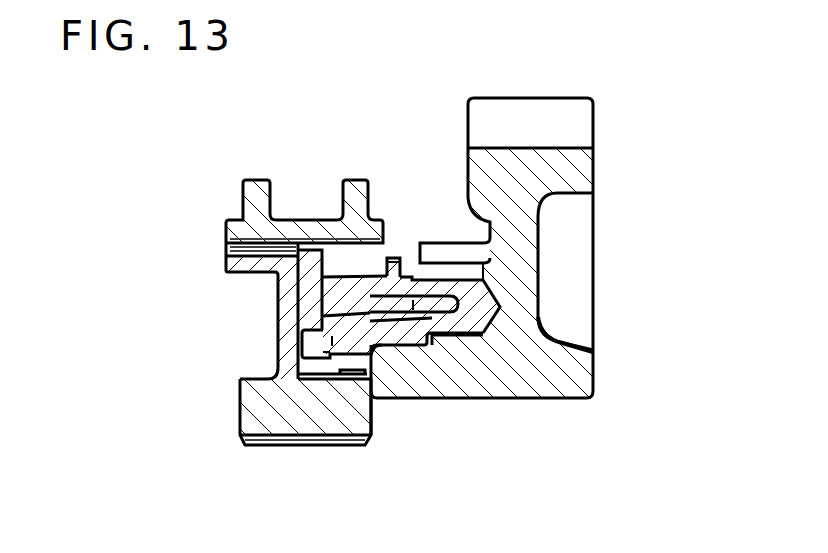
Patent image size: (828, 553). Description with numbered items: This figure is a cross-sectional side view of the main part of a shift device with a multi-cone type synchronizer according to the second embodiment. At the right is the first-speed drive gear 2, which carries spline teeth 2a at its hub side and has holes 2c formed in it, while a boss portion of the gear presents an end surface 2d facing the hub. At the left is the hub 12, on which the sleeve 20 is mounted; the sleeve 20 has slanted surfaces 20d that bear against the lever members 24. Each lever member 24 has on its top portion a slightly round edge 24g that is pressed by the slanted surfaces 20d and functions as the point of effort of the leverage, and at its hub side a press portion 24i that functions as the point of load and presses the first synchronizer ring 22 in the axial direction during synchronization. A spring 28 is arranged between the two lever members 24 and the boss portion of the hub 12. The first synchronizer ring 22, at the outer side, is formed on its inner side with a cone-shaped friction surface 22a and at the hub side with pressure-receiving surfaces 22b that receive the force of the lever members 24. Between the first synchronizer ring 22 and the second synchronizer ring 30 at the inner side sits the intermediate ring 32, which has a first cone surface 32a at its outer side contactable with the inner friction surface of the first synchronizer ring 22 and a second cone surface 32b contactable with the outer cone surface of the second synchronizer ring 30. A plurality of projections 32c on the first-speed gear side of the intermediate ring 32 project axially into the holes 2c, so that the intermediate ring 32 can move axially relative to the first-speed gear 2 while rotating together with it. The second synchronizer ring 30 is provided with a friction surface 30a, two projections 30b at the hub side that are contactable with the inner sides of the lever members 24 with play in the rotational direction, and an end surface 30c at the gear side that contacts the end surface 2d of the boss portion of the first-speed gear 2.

The first-speed drive gear 2 is at (504, 132).
The spline teeth 2a is at (443, 243).
The holes 2c is at (545, 262).
The end surface of boss portion 2d is at (440, 360).
The hub 12 is at (245, 423).
The sleeve 20 is at (340, 218).
The slanted surfaces 20d is at (293, 243).
The first synchronizer ring 22 is at (335, 305).
The cone-shaped friction surface 22a is at (495, 300).
The pressure-receiving surfaces 22b is at (308, 300).
The lever members 24 is at (300, 322).
The round edge 24g is at (234, 247).
The press portion 24i is at (386, 262).
The spring 28 is at (353, 372).
The second synchronizer ring 30 is at (423, 350).
The friction surface 30a is at (445, 327).
The projections 30b is at (324, 355).
The end surface 30c is at (500, 327).
The intermediate ring 32 is at (373, 358).
The first cone surface 32a is at (467, 271).
The second cone surface 32b is at (572, 350).
The projections 32c is at (470, 320).